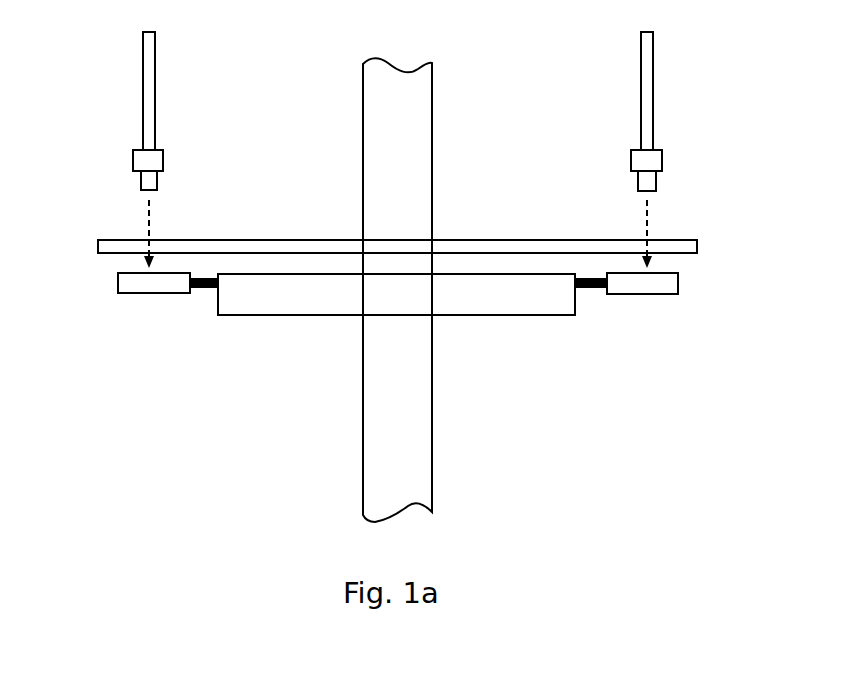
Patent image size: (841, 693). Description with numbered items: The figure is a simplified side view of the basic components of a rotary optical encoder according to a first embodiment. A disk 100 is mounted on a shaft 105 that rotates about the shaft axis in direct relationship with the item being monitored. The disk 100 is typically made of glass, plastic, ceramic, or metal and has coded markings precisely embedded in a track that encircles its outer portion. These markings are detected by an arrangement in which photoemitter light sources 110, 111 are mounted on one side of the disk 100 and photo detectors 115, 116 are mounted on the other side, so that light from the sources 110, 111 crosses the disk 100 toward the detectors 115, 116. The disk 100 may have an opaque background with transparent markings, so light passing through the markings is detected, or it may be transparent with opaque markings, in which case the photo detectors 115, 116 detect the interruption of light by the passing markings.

The disk 100 is at (98, 247).
The shaft 105 is at (432, 146).
The photoemitter light source 110 is at (140, 183).
The photoemitter light source 111 is at (656, 182).
The photo detector 115 is at (118, 283).
The photo detector 116 is at (678, 283).